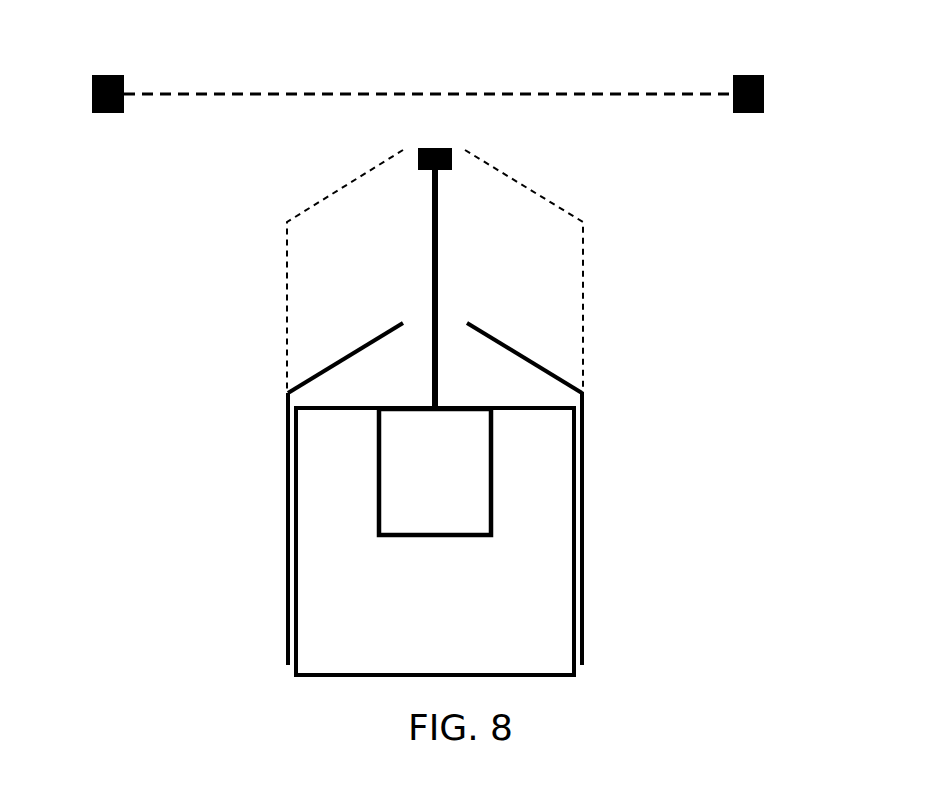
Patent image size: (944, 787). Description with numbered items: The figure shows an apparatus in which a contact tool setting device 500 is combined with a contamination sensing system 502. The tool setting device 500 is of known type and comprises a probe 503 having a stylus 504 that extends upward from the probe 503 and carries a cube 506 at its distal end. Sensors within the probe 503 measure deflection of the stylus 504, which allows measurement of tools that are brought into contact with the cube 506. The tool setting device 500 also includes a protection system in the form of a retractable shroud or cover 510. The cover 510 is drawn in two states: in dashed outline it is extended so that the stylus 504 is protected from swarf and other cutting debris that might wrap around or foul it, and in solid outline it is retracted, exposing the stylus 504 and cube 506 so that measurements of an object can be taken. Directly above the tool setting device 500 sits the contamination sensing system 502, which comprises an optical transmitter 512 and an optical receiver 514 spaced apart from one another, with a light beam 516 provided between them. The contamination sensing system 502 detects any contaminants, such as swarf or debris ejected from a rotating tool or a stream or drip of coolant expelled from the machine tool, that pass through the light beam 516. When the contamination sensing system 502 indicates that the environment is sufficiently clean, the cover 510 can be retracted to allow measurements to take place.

The contact tool setting device 500 is at (650, 488).
The contamination sensing system 502 is at (778, 86).
The probe 503 is at (462, 485).
The stylus 504 is at (437, 270).
The cube 506 is at (423, 172).
The retractable shroud or cover 510 is at (502, 342).
The optical transmitter 512 is at (105, 75).
The optical receiver 514 is at (750, 75).
The light beam 516 is at (385, 93).